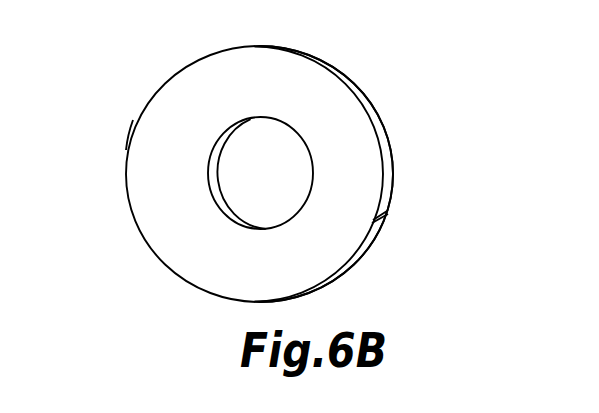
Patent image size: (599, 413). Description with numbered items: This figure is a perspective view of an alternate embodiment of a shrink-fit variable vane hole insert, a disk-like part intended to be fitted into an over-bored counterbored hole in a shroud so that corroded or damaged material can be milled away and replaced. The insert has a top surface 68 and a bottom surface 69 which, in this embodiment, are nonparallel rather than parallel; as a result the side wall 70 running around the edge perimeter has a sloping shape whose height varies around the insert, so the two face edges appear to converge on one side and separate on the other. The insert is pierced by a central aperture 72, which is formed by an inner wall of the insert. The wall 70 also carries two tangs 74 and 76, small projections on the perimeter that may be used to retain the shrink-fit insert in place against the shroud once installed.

The top surface 68 is at (175, 95).
The bottom surface 69 is at (342, 74).
The side wall 70 is at (391, 152).
The aperture 72 is at (236, 181).
The tang 74 is at (388, 215).
The tang 76 is at (128, 147).